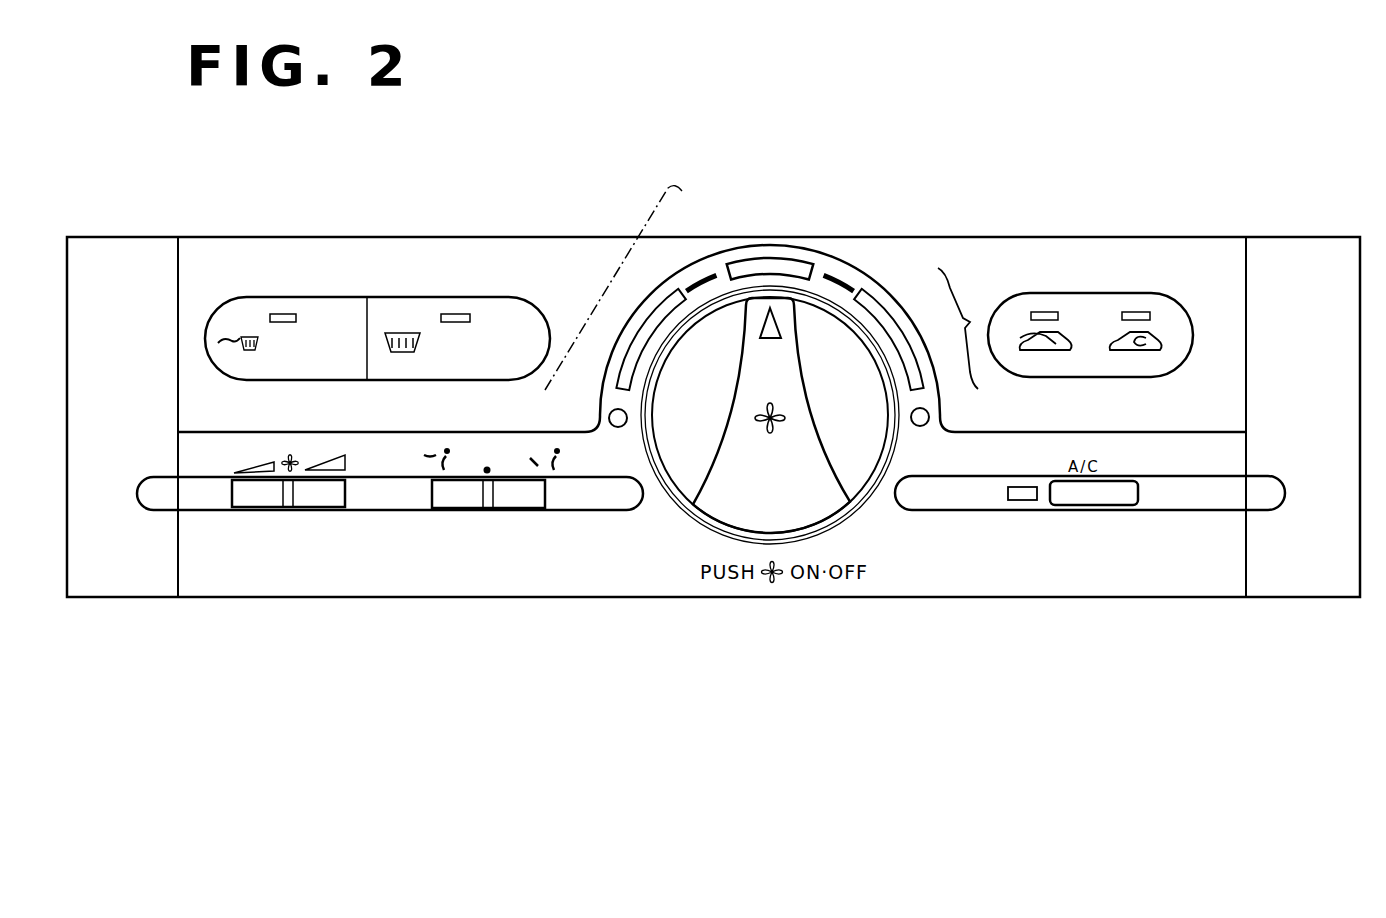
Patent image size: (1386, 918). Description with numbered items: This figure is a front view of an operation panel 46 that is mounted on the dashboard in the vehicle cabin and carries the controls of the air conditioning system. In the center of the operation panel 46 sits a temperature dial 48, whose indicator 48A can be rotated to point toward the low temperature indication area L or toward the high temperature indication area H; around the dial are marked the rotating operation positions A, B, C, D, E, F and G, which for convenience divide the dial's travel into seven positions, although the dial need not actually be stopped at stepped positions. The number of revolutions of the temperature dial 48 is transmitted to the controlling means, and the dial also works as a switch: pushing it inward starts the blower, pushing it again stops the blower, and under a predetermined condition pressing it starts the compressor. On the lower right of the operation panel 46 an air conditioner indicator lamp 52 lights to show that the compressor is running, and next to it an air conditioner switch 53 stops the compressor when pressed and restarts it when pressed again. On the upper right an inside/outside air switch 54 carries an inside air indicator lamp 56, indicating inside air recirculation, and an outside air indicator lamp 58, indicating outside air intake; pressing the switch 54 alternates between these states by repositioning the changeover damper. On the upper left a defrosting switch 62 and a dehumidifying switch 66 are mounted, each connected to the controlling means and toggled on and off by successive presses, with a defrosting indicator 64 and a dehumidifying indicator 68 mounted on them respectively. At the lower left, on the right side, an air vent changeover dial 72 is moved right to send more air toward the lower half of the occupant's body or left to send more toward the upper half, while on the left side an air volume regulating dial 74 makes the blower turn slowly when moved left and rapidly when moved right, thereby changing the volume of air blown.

The operation panel 46 is at (988, 237).
The temperature dial 48 is at (770, 415).
The indicator 48A is at (781, 322).
The air conditioner indicator lamp 52 is at (1021, 500).
The air conditioner switch 53 is at (1110, 494).
The inside/outside air switch 54 is at (1090, 309).
The inside air indicator lamp 56 is at (1138, 310).
The outside air indicator lamp 58 is at (1046, 310).
The defrosting switch 62 is at (377, 315).
The defrosting indicator 64 is at (457, 313).
The dehumidifying switch 66 is at (287, 313).
The dehumidifying indicator 68 is at (281, 313).
The air vent changeover dial 72 is at (522, 500).
The air volume regulating dial 74 is at (323, 500).
The rotating operation position A is at (611, 410).
The rotating operation position B is at (641, 338).
The rotating operation position C is at (705, 278).
The rotating operation position D is at (777, 258).
The rotating operation position E is at (848, 284).
The rotating operation position F is at (907, 345).
The rotating operation position G is at (926, 411).
The high temperature indication area H is at (963, 328).
The low temperature indication area L is at (613, 288).